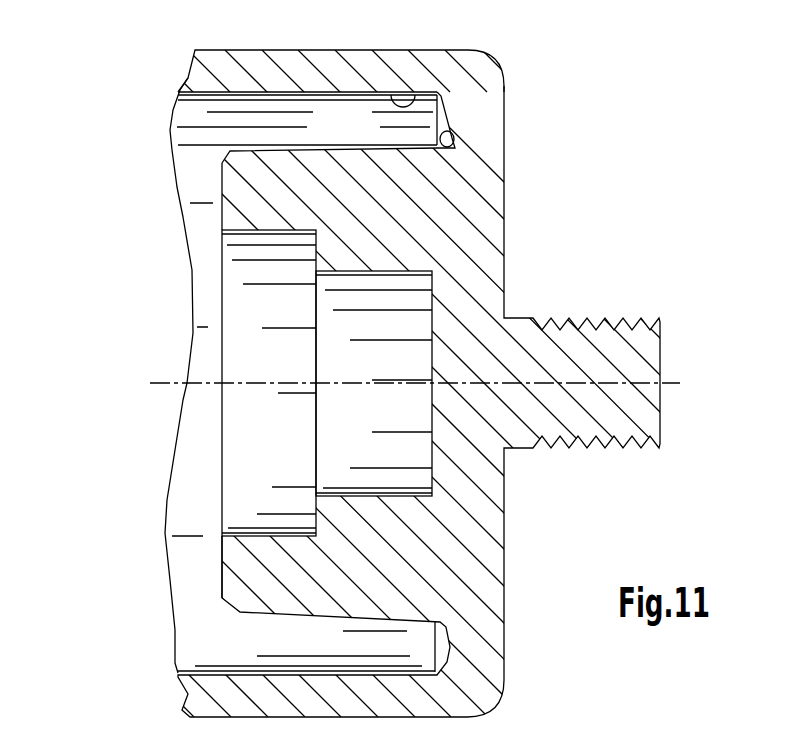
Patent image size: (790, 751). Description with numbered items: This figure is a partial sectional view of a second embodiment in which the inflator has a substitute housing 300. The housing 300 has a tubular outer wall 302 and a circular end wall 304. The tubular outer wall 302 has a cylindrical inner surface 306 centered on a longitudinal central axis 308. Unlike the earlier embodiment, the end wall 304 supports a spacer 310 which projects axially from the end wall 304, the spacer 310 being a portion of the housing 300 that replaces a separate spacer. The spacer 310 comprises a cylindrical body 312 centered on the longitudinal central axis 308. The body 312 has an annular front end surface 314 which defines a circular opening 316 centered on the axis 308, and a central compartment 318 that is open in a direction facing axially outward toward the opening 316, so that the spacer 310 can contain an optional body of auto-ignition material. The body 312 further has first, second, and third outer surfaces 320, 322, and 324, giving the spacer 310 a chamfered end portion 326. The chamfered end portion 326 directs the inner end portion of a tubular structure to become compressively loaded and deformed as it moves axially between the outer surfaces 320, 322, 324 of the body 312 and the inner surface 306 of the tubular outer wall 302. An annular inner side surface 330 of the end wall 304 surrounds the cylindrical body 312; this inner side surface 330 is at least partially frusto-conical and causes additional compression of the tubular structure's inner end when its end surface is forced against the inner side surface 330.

The housing 300 is at (570, 108).
The tubular outer wall 302 is at (340, 60).
The end wall 304 is at (485, 232).
The cylindrical inner surface 306 is at (413, 98).
The longitudinal central axis 308 is at (172, 382).
The spacer 310 is at (210, 185).
The cylindrical body 312 is at (243, 213).
The annular front end surface 314 is at (218, 572).
The circular opening 316 is at (205, 496).
The central compartment 318 is at (308, 442).
The first outer surface 320 is at (222, 158).
The second outer surface 322 is at (233, 157).
The third outer surface 324 is at (280, 140).
The chamfered end portion 326 is at (265, 153).
The annular inner side surface 330 is at (455, 148).